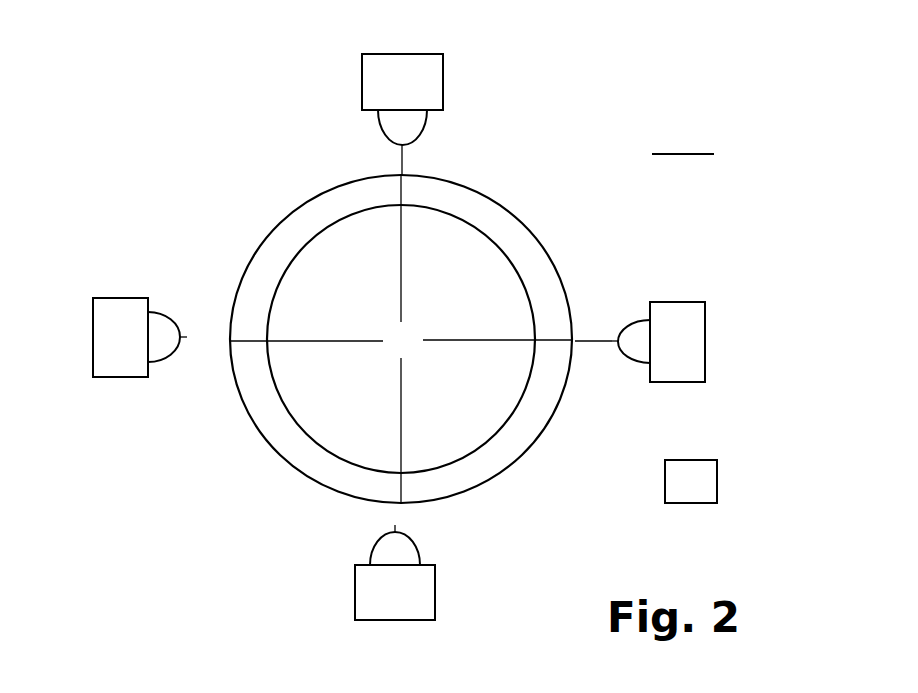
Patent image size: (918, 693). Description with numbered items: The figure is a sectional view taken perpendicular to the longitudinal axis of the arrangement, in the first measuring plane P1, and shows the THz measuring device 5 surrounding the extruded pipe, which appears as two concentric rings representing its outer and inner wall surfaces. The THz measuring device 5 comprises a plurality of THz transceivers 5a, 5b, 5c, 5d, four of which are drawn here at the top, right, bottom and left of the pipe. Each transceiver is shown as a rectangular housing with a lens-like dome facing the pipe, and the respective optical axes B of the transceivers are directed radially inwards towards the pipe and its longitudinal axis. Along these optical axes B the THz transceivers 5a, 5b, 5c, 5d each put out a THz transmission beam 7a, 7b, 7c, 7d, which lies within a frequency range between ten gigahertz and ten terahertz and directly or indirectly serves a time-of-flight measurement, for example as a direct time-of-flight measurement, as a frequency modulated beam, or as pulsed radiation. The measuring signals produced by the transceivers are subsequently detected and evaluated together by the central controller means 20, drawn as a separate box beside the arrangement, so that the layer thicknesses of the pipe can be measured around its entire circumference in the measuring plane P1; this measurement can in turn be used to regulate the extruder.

The THz measuring device 5 is at (166, 120).
The THz transceiver 5a is at (433, 66).
The THz transceiver 5b is at (688, 316).
The THz transceiver 5c is at (430, 585).
The THz transceiver 5d is at (133, 363).
The THz transmission beam 7a is at (399, 157).
The THz transmission beam 7b is at (553, 338).
The THz transmission beam 7c is at (402, 513).
The THz transmission beam 7d is at (195, 338).
The central controller means 20 is at (720, 480).
The first measuring plane P1 is at (683, 137).
The optical axis B is at (408, 164).